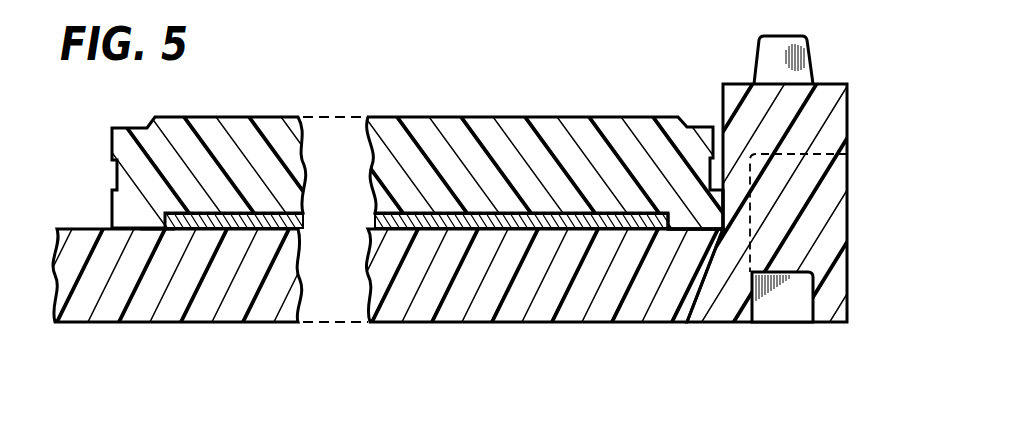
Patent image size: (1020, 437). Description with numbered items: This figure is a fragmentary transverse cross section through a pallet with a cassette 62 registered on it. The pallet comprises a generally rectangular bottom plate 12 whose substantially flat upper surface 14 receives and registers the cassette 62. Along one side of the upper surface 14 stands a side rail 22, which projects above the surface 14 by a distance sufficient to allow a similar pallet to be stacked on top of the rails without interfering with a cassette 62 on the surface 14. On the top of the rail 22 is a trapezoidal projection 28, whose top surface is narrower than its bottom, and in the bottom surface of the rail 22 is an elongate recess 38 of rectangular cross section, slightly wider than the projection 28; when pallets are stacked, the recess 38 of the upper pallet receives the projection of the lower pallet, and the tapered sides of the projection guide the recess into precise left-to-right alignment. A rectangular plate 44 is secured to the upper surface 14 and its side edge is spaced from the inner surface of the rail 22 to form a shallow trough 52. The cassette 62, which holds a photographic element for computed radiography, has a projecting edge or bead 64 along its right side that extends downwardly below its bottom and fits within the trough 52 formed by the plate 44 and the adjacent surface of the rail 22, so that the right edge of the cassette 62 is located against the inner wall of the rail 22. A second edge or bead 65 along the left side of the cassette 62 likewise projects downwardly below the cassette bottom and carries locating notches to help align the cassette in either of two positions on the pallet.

The bottom plate 12 is at (455, 312).
The upper surface 14 is at (304, 226).
The side rail 22 is at (723, 102).
The projection 28 is at (765, 54).
The elongate recess 38 is at (812, 312).
The rectangular plate 44 is at (278, 208).
The trough 52 is at (678, 236).
The cassette 62 is at (458, 133).
The projecting edge or bead 64 is at (710, 218).
The second edge or bead 65 is at (157, 231).